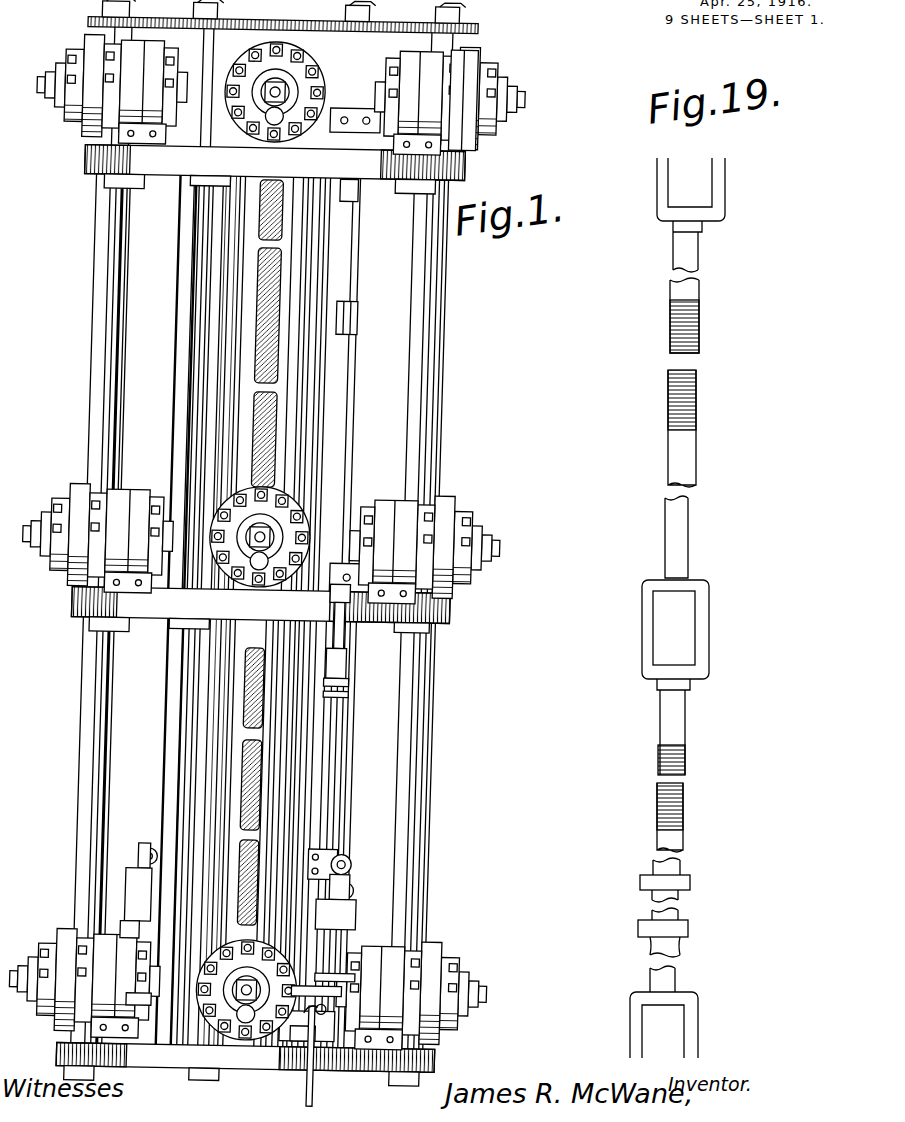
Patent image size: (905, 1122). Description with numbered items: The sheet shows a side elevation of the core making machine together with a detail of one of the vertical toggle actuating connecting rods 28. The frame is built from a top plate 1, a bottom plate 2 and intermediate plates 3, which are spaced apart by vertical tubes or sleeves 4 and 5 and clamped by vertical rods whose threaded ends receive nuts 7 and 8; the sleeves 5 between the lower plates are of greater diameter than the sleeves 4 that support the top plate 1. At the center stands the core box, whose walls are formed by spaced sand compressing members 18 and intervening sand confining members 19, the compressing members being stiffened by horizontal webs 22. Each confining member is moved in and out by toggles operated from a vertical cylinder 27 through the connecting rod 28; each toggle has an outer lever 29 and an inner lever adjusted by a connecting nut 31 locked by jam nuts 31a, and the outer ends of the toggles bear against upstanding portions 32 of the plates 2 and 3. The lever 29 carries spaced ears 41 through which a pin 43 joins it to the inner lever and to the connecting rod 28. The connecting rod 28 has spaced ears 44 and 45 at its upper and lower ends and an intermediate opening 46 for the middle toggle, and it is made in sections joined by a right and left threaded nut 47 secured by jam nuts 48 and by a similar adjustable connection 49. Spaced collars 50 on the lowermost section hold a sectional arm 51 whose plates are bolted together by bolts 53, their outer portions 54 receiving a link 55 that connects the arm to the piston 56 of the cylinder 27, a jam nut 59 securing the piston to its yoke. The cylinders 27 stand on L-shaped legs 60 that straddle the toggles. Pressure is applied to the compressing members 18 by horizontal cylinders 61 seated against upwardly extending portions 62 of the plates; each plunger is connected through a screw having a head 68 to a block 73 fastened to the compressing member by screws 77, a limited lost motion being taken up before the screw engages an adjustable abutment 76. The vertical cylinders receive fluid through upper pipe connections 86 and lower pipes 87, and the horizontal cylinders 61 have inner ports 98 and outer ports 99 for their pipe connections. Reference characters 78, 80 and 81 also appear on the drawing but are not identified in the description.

In FIG. 1, the top horizontal plate 1 is at (448, 28).
In FIG. 1, the bottom horizontal plate 2 is at (449, 1060).
In FIG. 1, the intermediate horizontal plates 3 is at (453, 170).
In FIG. 1, the vertical tubes or sleeves 4 is at (455, 60).
In FIG. 1, the vertical tubes or sleeves 5 is at (124, 395).
In FIG. 1, the nuts 7 is at (345, 22).
In FIG. 1, the nuts 8 is at (168, 1072).
In FIG. 1, the sand compressing members 18 is at (213, 318).
In FIG. 1, the sand confining members 19 is at (225, 358).
In FIG. 1, the horizontal webs 22 is at (248, 240).
In FIG. 1, the vertical cylinder 27 is at (353, 1002).
In FIG. 1, the vertical connecting rod 28 is at (346, 775).
In FIG. 19, the vertical connecting rod 28 is at (690, 530).
In FIG. 1, the outer lever 29 is at (360, 630).
In FIG. 1, the connecting nut 31 is at (318, 592).
In FIG. 1, the jam nuts 31a is at (260, 590).
In FIG. 1, the upstanding portions 32 is at (348, 177).
In FIG. 1, the spaced ears 41 is at (345, 625).
In FIG. 1, the pivot or pin 43 is at (322, 132).
In FIG. 1, the spaced ears 44 is at (342, 198).
In FIG. 19, the spaced ears 44 is at (727, 183).
In FIG. 19, the spaced ears 45 is at (700, 1030).
In FIG. 1, the intermediate opening 46 is at (338, 600).
In FIG. 19, the intermediate opening 46 is at (712, 652).
In FIG. 1, the nut 47 is at (349, 660).
In FIG. 19, the nut 47 is at (686, 792).
In FIG. 1, the jam nuts 48 is at (351, 683).
In FIG. 1, the adjustable connection 49 is at (349, 316).
In FIG. 19, the adjustable connection 49 is at (699, 382).
In FIG. 1, the spaced collars 50 is at (348, 850).
In FIG. 19, the spaced collars 50 is at (690, 880).
In FIG. 1, the sectional arm 51 is at (348, 855).
In FIG. 1, the bolts 53 is at (343, 822).
In FIG. 1, the outer portions 54 is at (158, 850).
In FIG. 1, the link 55 is at (152, 868).
In FIG. 1, the piston 56 is at (145, 930).
In FIG. 1, the jam nut 59 is at (145, 912).
In FIG. 1, the spaced legs 60 is at (315, 1030).
In FIG. 1, the horizontal cylinders 61 is at (256, 52).
In FIG. 1, the upwardly extending portions 62 is at (88, 158).
In FIG. 1, the head 68 is at (330, 530).
In FIG. 1, the block 73 is at (212, 490).
In FIG. 1, the adjustable abutment 76 is at (197, 95).
In FIG. 1, the upper and lower screws 77 is at (326, 45).
In FIG. 1, the rod 78 is at (159, 652).
In FIG. 1, the cam plate 80 is at (260, 983).
In FIG. 1, the cam plate 81 is at (259, 530).
In FIG. 1, the upper pipe connections 86 is at (340, 972).
In FIG. 1, the lower pipes 87 is at (321, 1098).
In FIG. 1, the inner ports or openings 98 is at (400, 535).
In FIG. 1, the ports or openings 99 is at (455, 545).